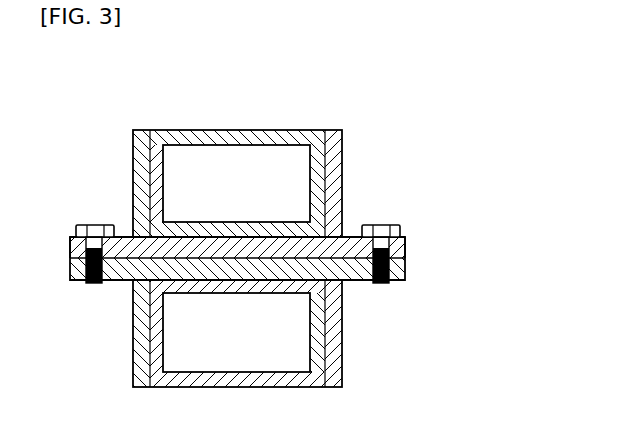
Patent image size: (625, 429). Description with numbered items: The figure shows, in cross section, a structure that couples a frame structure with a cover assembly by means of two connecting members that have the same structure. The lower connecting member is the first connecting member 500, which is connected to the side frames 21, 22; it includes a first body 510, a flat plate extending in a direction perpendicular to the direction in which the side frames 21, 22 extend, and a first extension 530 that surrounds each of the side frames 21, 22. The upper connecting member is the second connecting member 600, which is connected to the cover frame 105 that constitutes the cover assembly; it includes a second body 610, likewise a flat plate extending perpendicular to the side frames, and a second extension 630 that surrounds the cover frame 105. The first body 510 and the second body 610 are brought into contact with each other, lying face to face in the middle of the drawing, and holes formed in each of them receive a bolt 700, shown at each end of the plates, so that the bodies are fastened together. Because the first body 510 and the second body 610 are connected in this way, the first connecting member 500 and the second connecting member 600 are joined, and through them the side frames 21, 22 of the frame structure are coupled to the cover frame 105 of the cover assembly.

The cover frame 105 is at (315, 137).
The second connecting member 600 is at (352, 137).
The second extension 630 is at (333, 188).
The bolt 700 is at (93, 227).
The second body 610 is at (397, 242).
The first body 510 is at (398, 270).
The side frame 21 is at (376, 333).
The side frame 22 is at (321, 308).
The first extension 530 is at (337, 332).
The first connecting member 500 is at (360, 356).